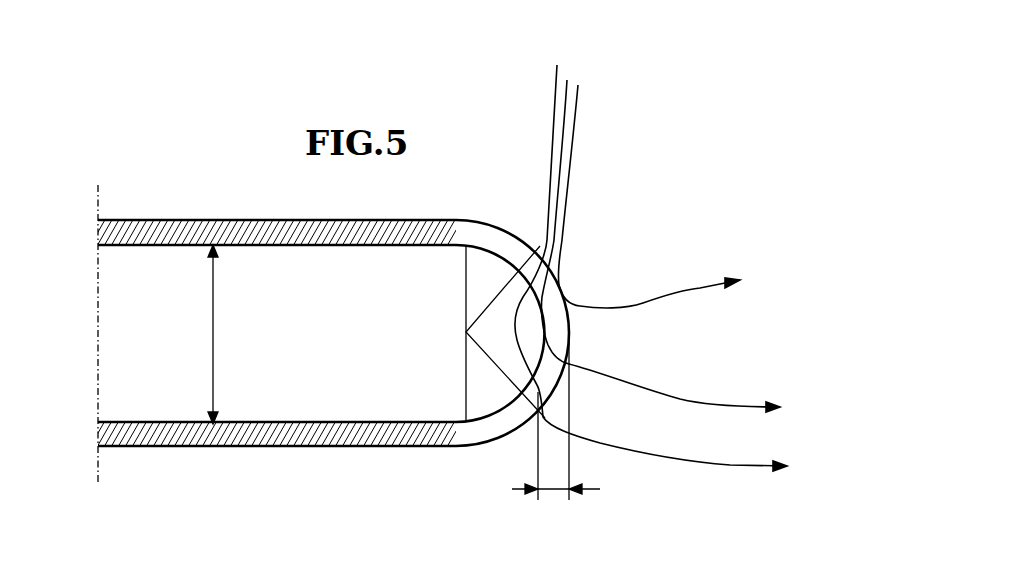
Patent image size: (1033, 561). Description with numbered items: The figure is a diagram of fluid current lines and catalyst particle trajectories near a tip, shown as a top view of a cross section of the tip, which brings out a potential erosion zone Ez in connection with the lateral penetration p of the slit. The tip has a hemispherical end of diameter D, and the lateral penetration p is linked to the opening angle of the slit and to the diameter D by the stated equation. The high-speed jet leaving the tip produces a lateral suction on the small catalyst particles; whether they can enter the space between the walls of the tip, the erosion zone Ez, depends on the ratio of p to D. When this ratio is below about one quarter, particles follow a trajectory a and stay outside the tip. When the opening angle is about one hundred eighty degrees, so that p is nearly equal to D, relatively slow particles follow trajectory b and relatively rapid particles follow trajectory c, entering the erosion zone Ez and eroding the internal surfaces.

The diameter of the hemisphere D is at (228, 334).
The lateral penetration p is at (556, 416).
The trajectory of type a is at (668, 196).
The trajectory b is at (677, 252).
The trajectory c is at (665, 274).
The erosion zone Ez is at (580, 330).